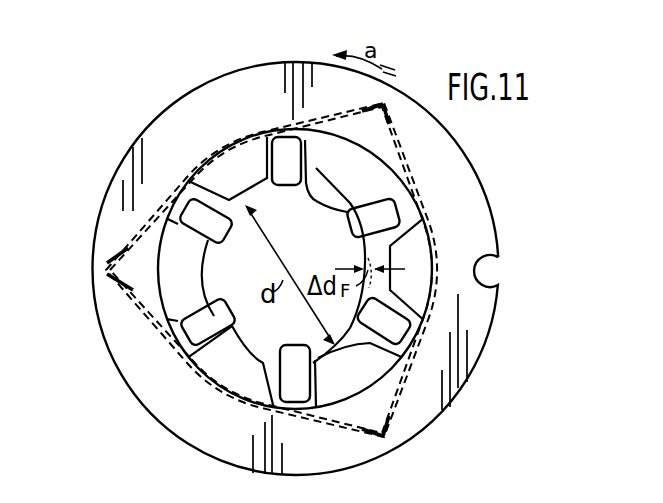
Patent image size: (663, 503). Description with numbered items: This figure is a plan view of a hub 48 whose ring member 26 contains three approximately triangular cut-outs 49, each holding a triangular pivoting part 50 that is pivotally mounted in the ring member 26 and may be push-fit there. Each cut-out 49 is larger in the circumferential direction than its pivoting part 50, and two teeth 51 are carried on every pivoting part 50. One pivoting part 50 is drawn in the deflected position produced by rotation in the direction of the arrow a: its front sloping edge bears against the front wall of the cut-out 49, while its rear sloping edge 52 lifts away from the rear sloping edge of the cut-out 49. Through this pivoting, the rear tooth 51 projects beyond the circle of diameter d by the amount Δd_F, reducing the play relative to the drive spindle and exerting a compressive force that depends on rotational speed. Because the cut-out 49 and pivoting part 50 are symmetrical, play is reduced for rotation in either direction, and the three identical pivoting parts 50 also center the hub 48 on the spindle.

The hub 48 is at (148, 118).
The ring member 26 is at (122, 165).
The cut-out 49 is at (408, 166).
The rear sloping edge 52 is at (410, 186).
The pivoting part 50 is at (318, 168).
The tooth 51 is at (231, 224).